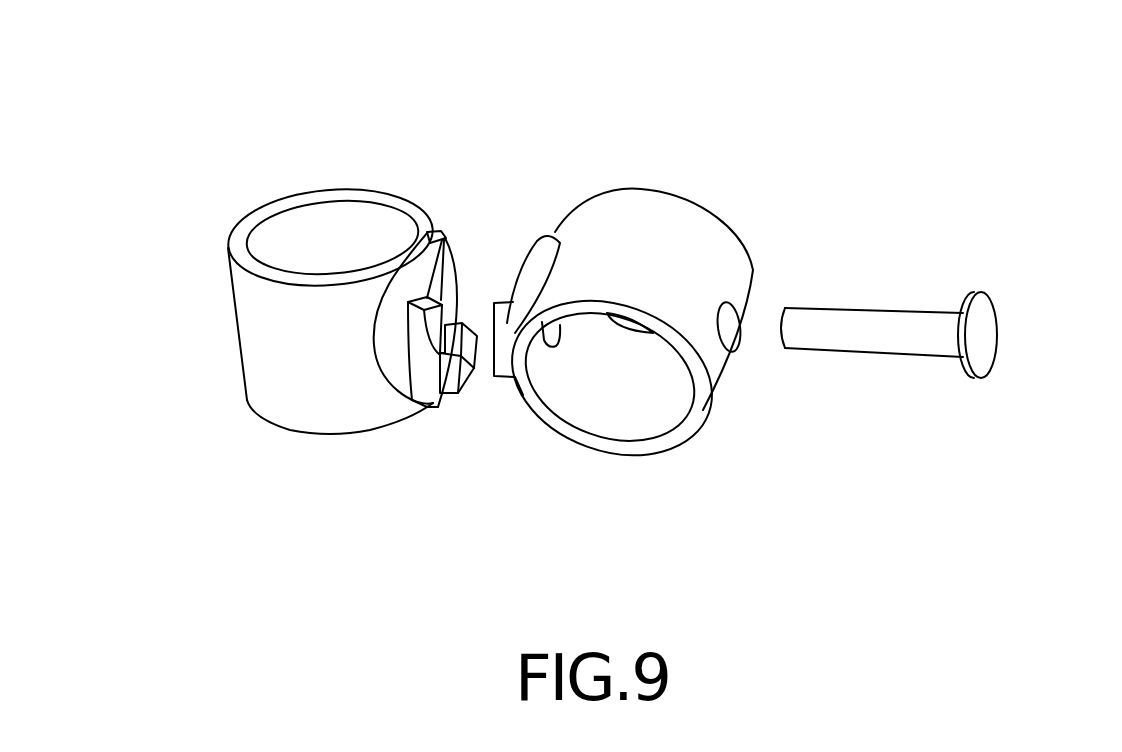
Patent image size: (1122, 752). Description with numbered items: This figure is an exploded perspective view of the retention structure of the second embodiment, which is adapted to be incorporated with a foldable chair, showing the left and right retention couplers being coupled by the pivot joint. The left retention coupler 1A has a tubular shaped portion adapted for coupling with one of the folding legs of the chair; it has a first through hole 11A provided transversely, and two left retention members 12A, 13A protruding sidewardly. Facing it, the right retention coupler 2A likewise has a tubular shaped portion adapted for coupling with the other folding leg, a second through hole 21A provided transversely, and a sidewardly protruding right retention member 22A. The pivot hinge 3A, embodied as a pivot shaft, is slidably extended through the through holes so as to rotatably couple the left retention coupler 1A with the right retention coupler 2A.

The left retention coupler 1A is at (273, 342).
The first through hole 11A is at (437, 397).
The left retention member 12A is at (445, 237).
The left retention member 13A is at (465, 357).
The right retention coupler 2A is at (672, 253).
The second through hole 21A is at (725, 328).
The right retention member 22A is at (545, 236).
The pivot hinge 3A is at (907, 332).